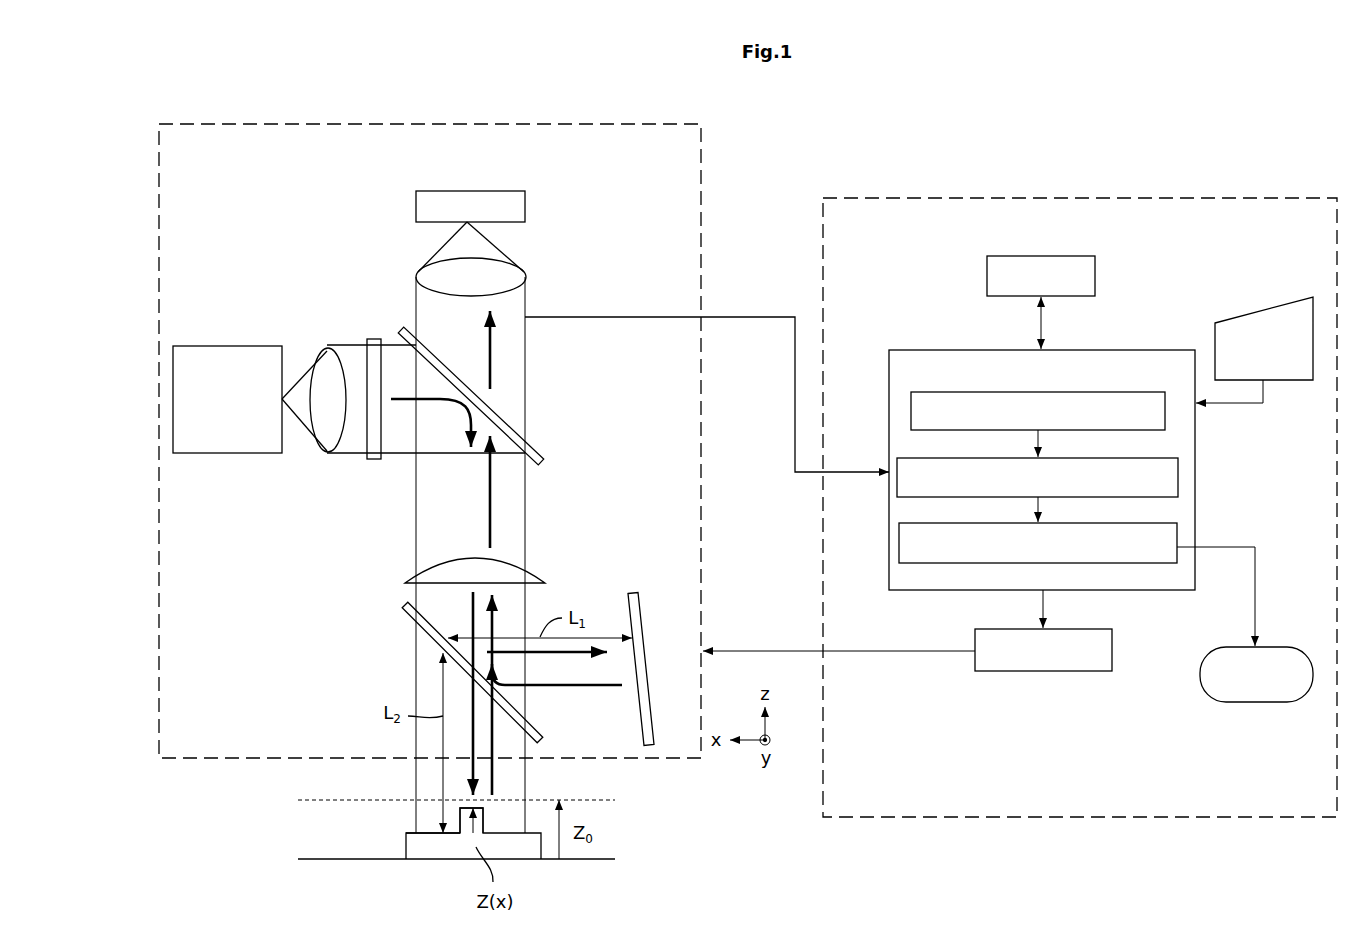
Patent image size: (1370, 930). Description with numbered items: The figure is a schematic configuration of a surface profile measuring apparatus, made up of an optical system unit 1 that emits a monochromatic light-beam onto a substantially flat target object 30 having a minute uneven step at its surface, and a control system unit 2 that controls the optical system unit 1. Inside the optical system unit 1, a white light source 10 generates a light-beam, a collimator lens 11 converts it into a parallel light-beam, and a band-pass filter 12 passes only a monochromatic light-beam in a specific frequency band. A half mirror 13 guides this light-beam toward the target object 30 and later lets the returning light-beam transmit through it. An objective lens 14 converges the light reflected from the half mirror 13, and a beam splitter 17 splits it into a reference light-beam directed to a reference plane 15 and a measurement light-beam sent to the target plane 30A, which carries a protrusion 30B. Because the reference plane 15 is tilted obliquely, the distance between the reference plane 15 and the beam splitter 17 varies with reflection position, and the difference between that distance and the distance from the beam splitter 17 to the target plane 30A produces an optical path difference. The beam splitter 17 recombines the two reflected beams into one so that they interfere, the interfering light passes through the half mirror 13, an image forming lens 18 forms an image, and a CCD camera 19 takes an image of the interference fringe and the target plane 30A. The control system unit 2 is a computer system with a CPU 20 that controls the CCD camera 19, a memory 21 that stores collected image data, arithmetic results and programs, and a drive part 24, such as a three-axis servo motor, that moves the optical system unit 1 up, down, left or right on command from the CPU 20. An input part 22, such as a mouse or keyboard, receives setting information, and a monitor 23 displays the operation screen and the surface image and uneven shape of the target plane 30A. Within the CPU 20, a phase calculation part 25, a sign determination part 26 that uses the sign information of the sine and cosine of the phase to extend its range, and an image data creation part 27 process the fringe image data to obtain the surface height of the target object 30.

The optical system unit 1 is at (440, 124).
The control system unit 2 is at (1050, 198).
The white light source 10 is at (236, 346).
The collimator lens 11 is at (322, 348).
The band-pass filter 12 is at (370, 339).
The half mirror 13 is at (404, 326).
The objective lens 14 is at (530, 572).
The reference plane 15 is at (648, 747).
The beam splitter 17 is at (420, 633).
The image forming lens 18 is at (416, 272).
The CCD camera 19 is at (416, 201).
The CPU 20 is at (1094, 350).
The memory 21 is at (1095, 273).
The input part 22 is at (1262, 311).
The monitor 23 is at (1266, 703).
The drive part 24 is at (1017, 672).
The phase calculation part 25 is at (1104, 392).
The sign determination part 26 is at (1136, 458).
The image data creation part 27 is at (1110, 523).
The target object 30 is at (541, 850).
The target plane 30A is at (406, 832).
The protrusion 30B is at (503, 815).